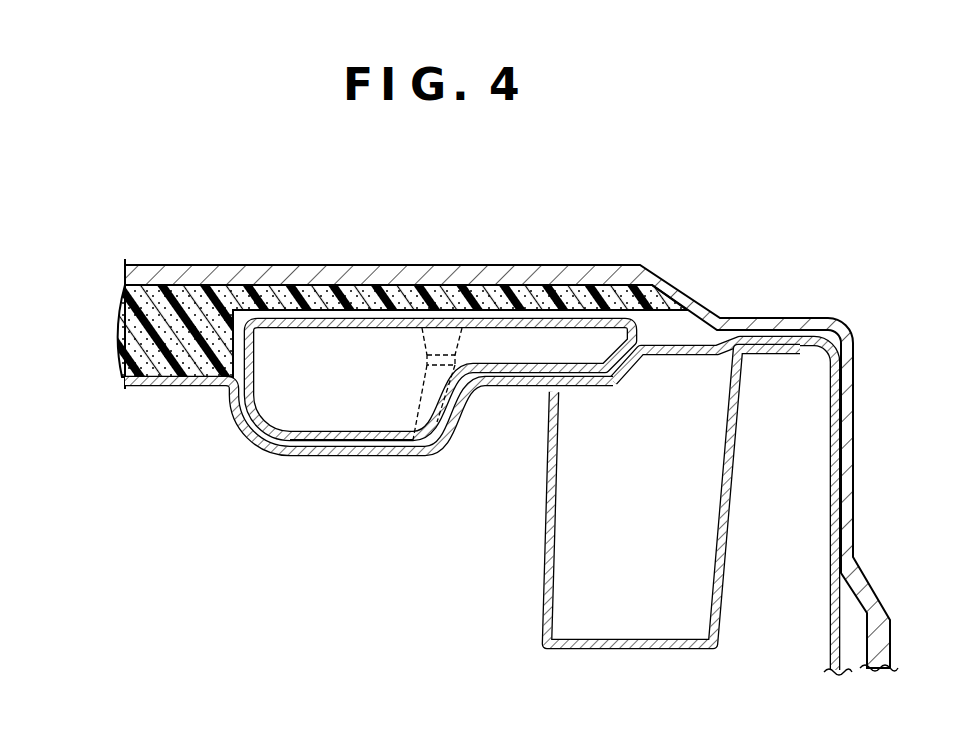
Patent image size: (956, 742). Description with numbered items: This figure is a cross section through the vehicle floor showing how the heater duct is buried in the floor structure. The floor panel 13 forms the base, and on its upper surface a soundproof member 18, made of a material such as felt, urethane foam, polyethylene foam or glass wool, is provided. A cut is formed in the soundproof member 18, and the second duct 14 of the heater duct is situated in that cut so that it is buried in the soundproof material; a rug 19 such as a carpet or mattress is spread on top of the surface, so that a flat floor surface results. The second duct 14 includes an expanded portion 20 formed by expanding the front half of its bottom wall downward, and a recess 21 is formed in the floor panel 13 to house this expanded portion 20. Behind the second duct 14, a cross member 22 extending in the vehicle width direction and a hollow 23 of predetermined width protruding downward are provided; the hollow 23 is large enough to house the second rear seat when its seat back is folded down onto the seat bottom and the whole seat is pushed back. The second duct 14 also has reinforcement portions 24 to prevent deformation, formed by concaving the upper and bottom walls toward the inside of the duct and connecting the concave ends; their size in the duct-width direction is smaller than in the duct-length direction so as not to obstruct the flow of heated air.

The floor panel 13 is at (148, 386).
The second duct 14 is at (318, 320).
The soundproof member 18 is at (122, 337).
The rug 19 is at (182, 265).
The expanded portion 20 is at (304, 441).
The recess 21 is at (396, 456).
The cross member 22 is at (543, 569).
The hollow 23 is at (853, 358).
The reinforcement portions 24 is at (423, 405).